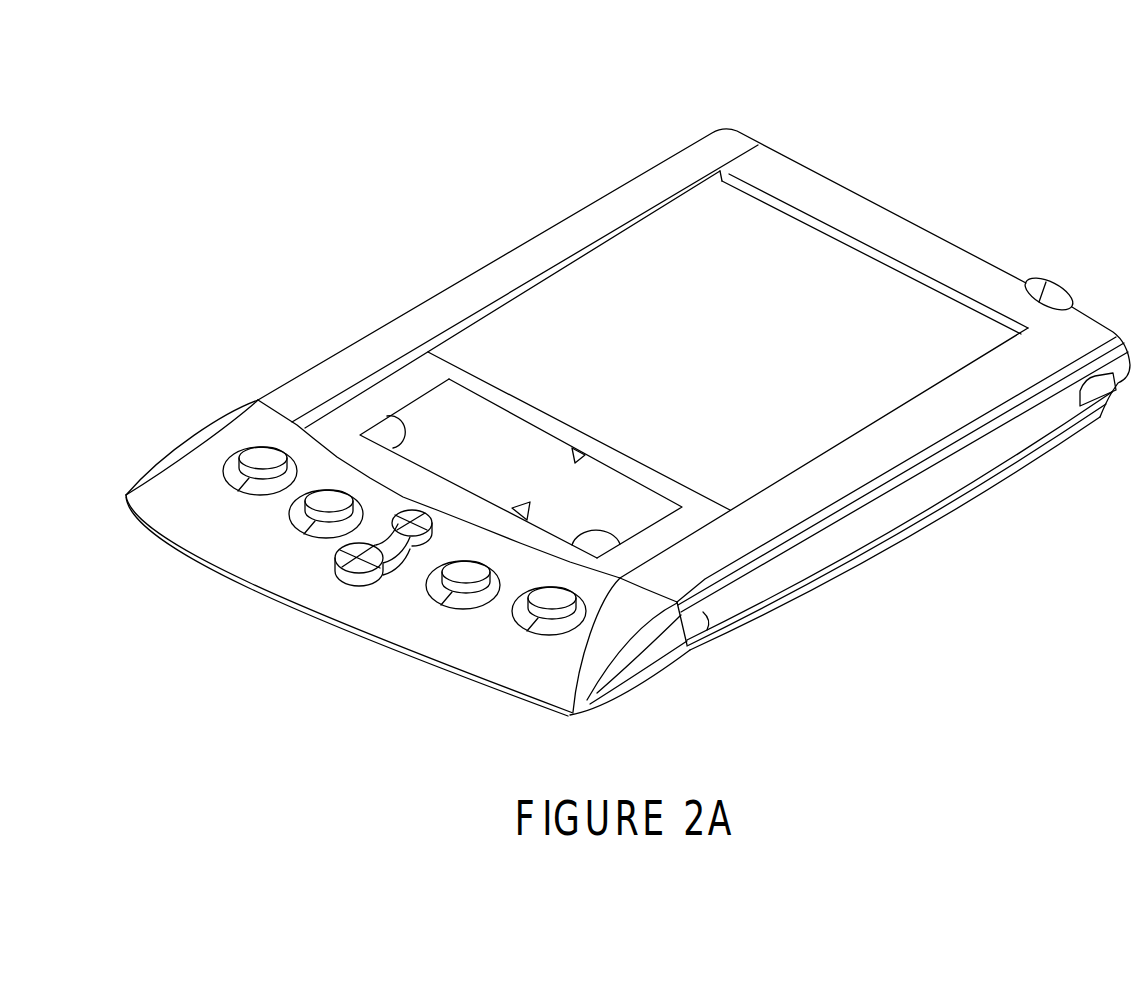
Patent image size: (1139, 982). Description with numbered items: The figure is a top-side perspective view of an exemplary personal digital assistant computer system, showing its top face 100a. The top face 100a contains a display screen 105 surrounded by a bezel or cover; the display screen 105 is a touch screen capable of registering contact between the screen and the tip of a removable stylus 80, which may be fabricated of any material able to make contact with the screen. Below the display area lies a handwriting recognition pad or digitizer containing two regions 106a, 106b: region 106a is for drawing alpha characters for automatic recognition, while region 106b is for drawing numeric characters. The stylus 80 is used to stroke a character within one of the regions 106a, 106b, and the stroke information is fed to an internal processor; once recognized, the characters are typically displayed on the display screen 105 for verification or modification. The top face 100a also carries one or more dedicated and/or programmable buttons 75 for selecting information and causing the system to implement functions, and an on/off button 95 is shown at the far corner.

The top face 100a is at (155, 79).
The display screen 105 is at (738, 260).
The region 106a is at (482, 451).
The region 106b is at (618, 520).
The buttons 75 is at (250, 457).
The stylus 80 is at (845, 533).
The on/off button 95 is at (1047, 280).